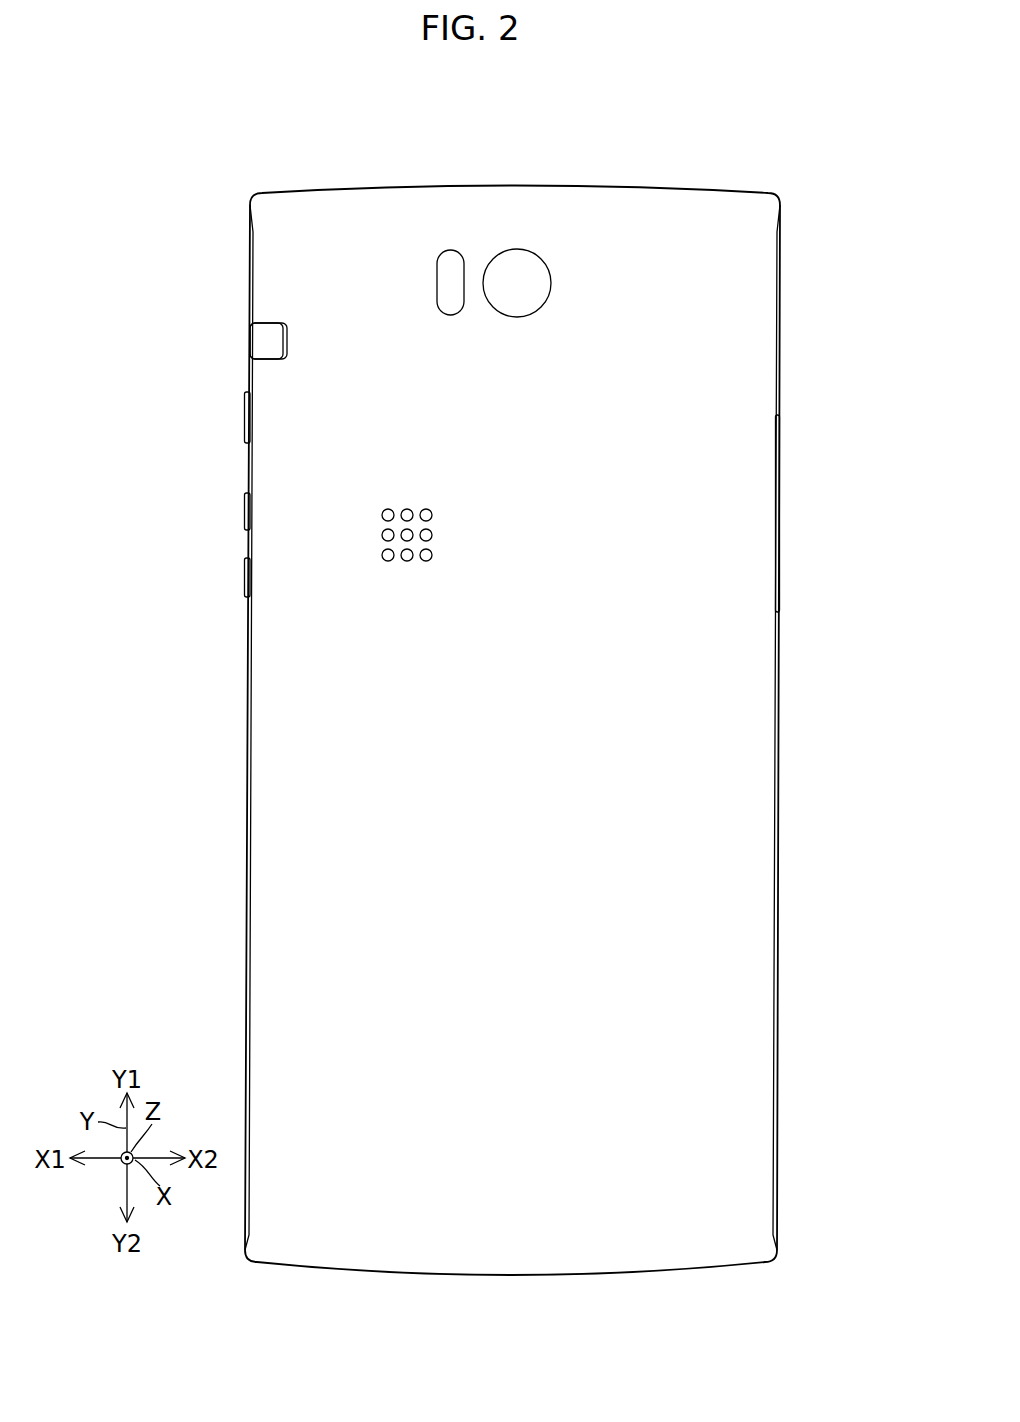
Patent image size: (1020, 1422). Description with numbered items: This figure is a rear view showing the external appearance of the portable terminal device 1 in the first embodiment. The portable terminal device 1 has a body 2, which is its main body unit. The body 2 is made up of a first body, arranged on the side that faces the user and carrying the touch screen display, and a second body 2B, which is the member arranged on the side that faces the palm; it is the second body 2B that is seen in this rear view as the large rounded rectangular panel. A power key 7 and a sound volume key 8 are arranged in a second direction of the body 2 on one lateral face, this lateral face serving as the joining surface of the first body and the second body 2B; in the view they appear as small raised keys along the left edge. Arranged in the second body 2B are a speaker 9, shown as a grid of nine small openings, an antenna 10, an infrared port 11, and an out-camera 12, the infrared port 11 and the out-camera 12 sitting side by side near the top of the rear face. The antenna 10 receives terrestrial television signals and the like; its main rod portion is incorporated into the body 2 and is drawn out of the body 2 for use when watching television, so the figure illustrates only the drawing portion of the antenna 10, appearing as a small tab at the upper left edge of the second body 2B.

The portable terminal device 1 is at (745, 135).
The body 2 is at (780, 197).
The second body 2B is at (755, 343).
The power key 7 is at (244, 417).
The sound volume key 8 is at (238, 488).
The speaker 9 is at (380, 562).
The antenna 10 is at (246, 341).
The infrared port 11 is at (449, 260).
The out-camera 12 is at (518, 262).